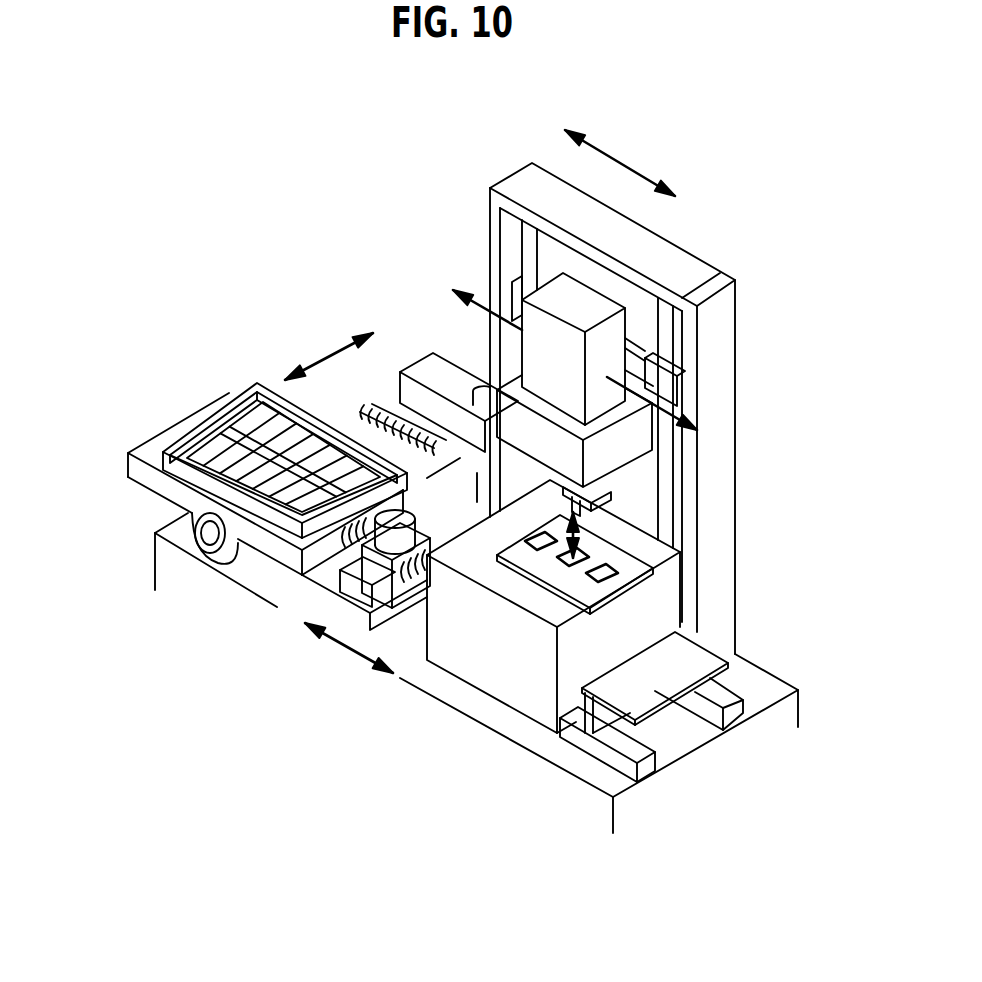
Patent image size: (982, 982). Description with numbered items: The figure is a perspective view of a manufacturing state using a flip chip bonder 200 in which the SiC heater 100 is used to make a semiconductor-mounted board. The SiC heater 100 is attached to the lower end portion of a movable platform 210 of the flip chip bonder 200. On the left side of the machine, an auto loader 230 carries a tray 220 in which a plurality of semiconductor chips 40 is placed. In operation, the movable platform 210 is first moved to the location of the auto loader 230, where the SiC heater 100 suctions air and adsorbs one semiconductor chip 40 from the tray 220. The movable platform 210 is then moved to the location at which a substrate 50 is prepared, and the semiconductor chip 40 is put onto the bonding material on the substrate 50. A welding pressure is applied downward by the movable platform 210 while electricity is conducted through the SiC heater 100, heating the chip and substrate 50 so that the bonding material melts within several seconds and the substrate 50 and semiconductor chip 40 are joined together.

The flip chip bonder 200 is at (701, 130).
The movable platform 210 is at (618, 450).
The SiC heater 100 is at (600, 491).
The substrate 50 is at (567, 578).
The semiconductor chip 40 is at (258, 418).
The tray 220 is at (178, 443).
The auto loader 230 is at (152, 480).